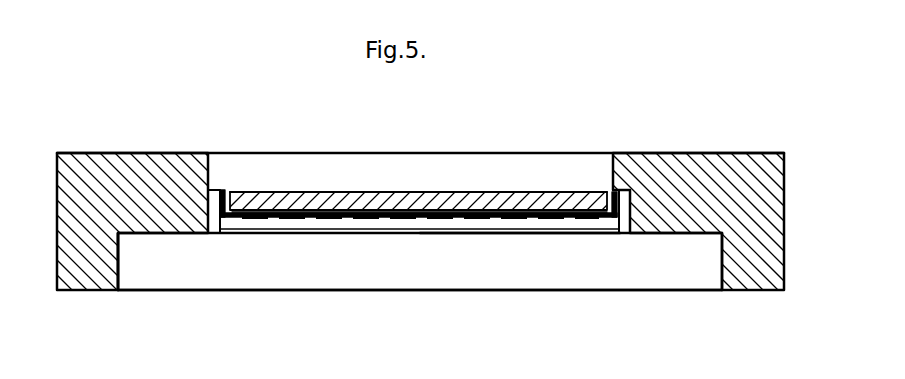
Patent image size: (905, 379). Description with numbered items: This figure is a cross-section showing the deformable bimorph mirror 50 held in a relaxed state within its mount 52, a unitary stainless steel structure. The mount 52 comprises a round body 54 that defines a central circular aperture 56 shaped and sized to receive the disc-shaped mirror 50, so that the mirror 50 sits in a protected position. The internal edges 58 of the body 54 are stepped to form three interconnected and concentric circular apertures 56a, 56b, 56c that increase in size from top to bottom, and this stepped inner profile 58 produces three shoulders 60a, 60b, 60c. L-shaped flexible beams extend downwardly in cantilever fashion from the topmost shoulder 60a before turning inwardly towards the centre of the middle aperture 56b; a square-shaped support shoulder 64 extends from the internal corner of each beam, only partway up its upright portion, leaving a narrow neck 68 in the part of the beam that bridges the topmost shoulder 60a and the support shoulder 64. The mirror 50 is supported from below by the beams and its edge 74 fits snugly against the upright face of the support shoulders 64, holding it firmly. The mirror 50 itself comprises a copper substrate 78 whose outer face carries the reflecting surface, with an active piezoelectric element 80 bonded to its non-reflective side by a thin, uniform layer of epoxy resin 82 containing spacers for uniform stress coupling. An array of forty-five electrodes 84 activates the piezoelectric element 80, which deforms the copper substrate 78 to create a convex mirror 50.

The deformable bimorph mirror 50 is at (488, 187).
The mount 52 is at (735, 166).
The round body 54 is at (120, 172).
The central circular aperture 56 is at (381, 148).
The topmost circular aperture 56a is at (242, 165).
The middle circular aperture 56b is at (572, 224).
The bottom circular aperture 56c is at (698, 275).
The stepped internal edges 58 is at (213, 248).
The topmost shoulder 60a is at (235, 188).
The middle shoulder 60b is at (207, 241).
The bottom shoulder 60c is at (118, 292).
The support shoulder 64 is at (619, 236).
The narrow neck 68 is at (612, 190).
The mirror's edge 74 is at (226, 234).
The copper substrate 78 is at (434, 192).
The active piezoelectric element 80 is at (470, 208).
The epoxy resin 82 is at (395, 220).
The electrodes 84 is at (505, 235).